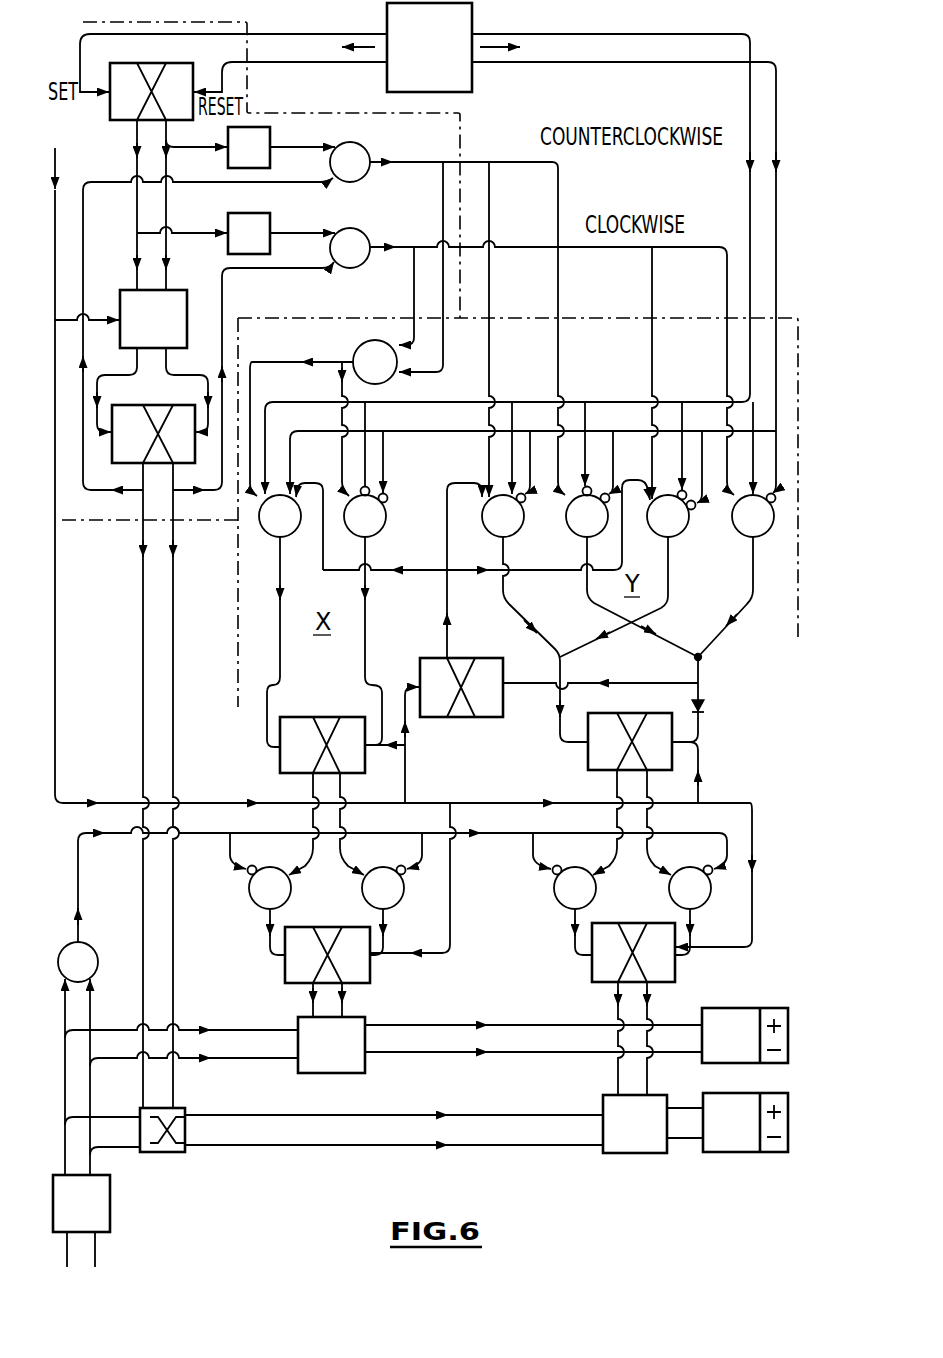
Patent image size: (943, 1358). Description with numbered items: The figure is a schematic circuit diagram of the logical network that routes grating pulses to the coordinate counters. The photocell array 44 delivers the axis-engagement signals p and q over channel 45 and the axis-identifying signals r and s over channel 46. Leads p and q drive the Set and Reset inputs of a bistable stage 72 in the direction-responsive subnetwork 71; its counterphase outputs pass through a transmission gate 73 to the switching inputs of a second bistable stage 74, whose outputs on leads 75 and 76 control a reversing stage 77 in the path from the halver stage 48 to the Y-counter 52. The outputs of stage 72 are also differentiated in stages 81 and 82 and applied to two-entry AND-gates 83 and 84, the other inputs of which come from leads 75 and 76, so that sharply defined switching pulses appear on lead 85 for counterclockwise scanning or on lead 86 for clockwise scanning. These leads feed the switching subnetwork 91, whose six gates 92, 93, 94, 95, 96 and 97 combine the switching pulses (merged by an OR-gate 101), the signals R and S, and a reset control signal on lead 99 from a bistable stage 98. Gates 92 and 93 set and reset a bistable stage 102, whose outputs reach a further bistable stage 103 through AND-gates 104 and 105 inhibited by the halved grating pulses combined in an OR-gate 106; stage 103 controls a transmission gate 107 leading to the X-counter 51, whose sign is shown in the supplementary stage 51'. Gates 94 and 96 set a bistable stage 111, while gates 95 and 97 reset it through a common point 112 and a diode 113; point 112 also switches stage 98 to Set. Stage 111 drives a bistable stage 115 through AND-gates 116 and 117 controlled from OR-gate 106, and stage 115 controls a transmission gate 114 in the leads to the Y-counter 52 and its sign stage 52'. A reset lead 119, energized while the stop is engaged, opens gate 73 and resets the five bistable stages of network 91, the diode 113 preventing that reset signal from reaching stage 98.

The array 44 is at (417, 59).
The channel 45 is at (291, 59).
The channel 46 is at (598, 59).
The halver stage 48 is at (110, 1205).
The X-counter 51 is at (745, 1016).
The supplementary stage 51' is at (788, 1035).
The Y-counter 52 is at (745, 1143).
The supplementary stage 52' is at (781, 1141).
The direction-responsive subnetwork 71 is at (440, 141).
The bistable stage 72 is at (128, 121).
The transmission gate 73 is at (127, 290).
The bistable stage 74 is at (155, 405).
The lead 75 is at (133, 785).
The lead 76 is at (177, 785).
The reversing stage 77 is at (187, 1108).
The differentiator stage 81 is at (270, 132).
The differentiator stage 82 is at (271, 218).
The two-entry AND-gate 83 is at (361, 146).
The two-entry AND-gate 84 is at (361, 232).
The lead 85 is at (512, 161).
The lead 86 is at (527, 246).
The switching subnetwork 91 is at (532, 357).
The four-entry AND-gate 92 is at (271, 540).
The three-entry AND-gate 93 is at (388, 508).
The four-entry AND-gate 94 is at (485, 528).
The three-entry AND-gate 95 is at (572, 532).
The four-entry AND-gate 96 is at (682, 540).
The three-entry AND-gate 97 is at (735, 530).
The bistable stage 98 is at (485, 658).
The lead 99 is at (440, 570).
The OR-gate 101 is at (362, 345).
The bistable stage 102 is at (323, 717).
The bistable stage 103 is at (325, 927).
The two-entry AND-gate 104 is at (277, 860).
The two-entry AND-gate 105 is at (394, 867).
The OR-gate 106 is at (90, 946).
The transmission gate 107 is at (298, 1021).
The bistable stage 111 is at (588, 755).
The common point 112 is at (702, 657).
The diode 113 is at (706, 706).
The transmission gate 114 is at (603, 1097).
The bistable stage 115 is at (645, 923).
The AND-gate 116 is at (586, 867).
The AND-gate 117 is at (701, 867).
The lead 119 is at (57, 195).